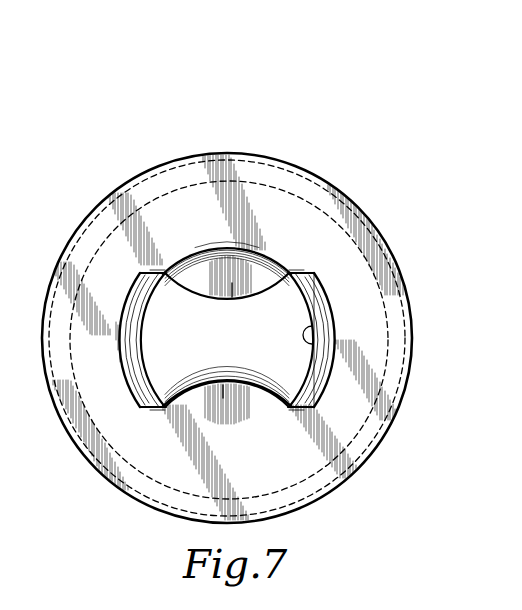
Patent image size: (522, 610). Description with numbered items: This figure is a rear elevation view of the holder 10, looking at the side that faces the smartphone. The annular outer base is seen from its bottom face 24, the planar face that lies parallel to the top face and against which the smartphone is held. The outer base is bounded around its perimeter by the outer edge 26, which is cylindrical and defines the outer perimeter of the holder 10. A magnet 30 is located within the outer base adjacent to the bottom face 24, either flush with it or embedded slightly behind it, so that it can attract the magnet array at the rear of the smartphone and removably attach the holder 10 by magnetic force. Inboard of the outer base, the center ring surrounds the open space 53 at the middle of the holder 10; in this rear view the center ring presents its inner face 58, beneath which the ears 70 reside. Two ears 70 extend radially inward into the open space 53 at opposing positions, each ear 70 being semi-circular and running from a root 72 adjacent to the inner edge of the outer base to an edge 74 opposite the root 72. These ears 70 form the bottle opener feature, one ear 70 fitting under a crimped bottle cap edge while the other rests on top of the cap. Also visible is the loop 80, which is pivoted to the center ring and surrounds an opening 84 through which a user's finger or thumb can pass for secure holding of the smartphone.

The holder 10 is at (124, 120).
The bottom face 24 is at (271, 473).
The outer edge 26 is at (313, 508).
The magnet 30 is at (369, 436).
The open space 53 is at (244, 353).
The inner face 58 is at (331, 318).
The ears 70 is at (234, 290).
The root 72 is at (244, 266).
The edge 74 is at (215, 296).
The loop 80 is at (316, 300).
The opening 84 is at (313, 323).